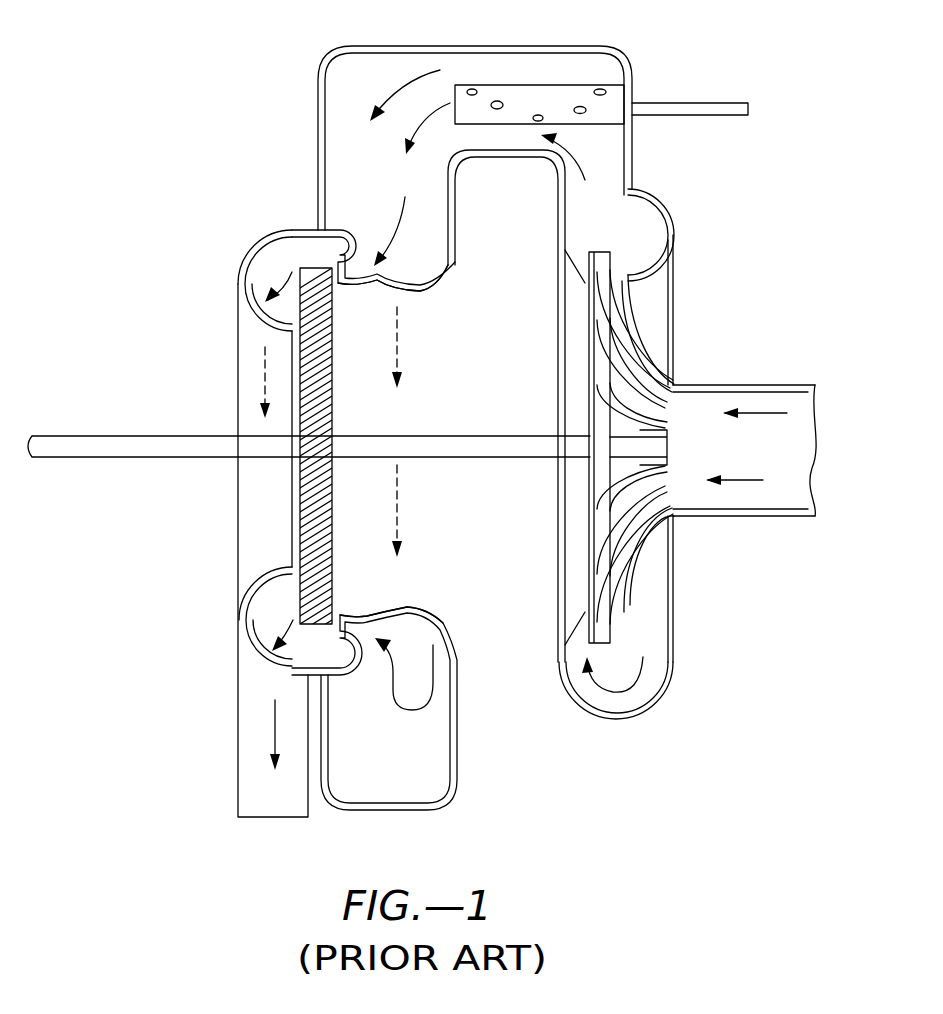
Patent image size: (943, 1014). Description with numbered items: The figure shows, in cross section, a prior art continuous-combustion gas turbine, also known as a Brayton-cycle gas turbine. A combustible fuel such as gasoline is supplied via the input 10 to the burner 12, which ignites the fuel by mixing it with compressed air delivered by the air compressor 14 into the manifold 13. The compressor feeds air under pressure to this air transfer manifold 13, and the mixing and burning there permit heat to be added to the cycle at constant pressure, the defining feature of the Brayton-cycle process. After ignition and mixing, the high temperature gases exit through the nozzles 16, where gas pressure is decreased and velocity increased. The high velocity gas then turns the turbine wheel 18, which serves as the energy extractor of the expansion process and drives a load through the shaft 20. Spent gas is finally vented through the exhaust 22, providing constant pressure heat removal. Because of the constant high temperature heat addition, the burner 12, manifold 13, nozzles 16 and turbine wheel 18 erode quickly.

The input 10 is at (673, 101).
The burner 12 is at (545, 95).
The manifold 13 is at (360, 47).
The air compressor 14 is at (740, 384).
The nozzles 16 is at (377, 289).
The turbine wheel 18 is at (310, 262).
The shaft 20 is at (167, 442).
The exhaust 22 is at (248, 752).